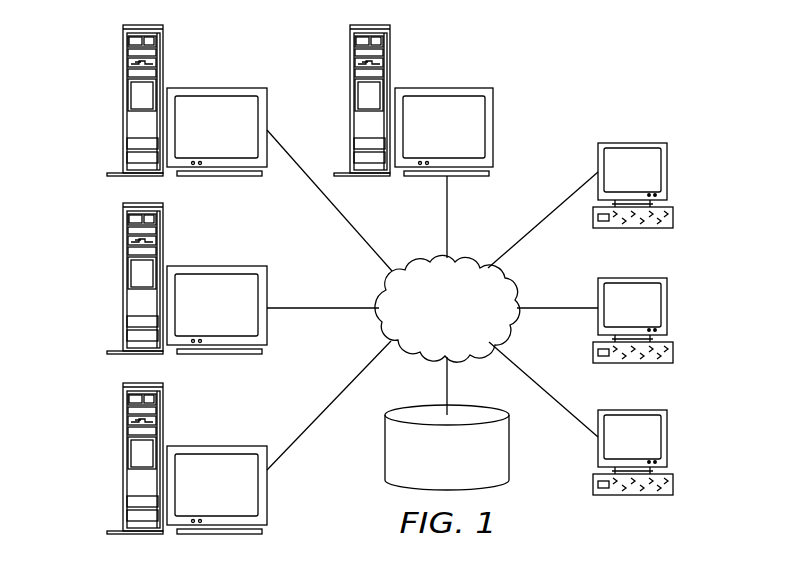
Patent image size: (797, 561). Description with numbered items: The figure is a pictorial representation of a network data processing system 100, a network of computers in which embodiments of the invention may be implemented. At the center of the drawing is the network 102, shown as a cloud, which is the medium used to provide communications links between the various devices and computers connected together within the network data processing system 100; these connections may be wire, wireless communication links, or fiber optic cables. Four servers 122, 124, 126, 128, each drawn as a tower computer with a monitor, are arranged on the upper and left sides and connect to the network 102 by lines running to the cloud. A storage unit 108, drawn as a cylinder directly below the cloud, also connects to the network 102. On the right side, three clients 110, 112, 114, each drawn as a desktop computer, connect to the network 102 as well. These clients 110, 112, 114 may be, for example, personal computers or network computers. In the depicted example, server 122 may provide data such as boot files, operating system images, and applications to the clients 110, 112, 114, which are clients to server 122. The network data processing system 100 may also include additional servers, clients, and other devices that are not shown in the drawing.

The network data processing system 100 is at (624, 64).
The network 102 is at (420, 258).
The storage unit 108 is at (386, 455).
The client 110 is at (667, 172).
The client 112 is at (667, 308).
The client 114 is at (667, 438).
The server 122 is at (350, 100).
The server 124 is at (123, 100).
The server 126 is at (123, 280).
The server 128 is at (123, 460).